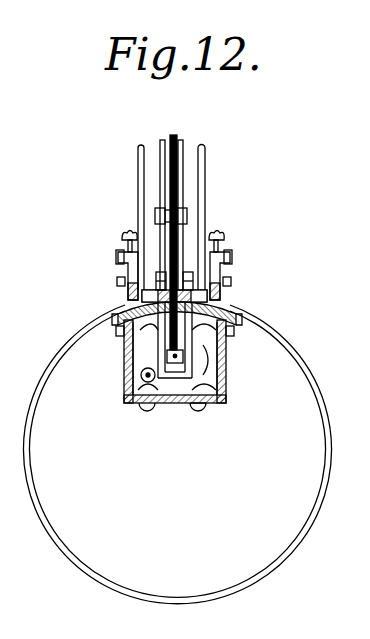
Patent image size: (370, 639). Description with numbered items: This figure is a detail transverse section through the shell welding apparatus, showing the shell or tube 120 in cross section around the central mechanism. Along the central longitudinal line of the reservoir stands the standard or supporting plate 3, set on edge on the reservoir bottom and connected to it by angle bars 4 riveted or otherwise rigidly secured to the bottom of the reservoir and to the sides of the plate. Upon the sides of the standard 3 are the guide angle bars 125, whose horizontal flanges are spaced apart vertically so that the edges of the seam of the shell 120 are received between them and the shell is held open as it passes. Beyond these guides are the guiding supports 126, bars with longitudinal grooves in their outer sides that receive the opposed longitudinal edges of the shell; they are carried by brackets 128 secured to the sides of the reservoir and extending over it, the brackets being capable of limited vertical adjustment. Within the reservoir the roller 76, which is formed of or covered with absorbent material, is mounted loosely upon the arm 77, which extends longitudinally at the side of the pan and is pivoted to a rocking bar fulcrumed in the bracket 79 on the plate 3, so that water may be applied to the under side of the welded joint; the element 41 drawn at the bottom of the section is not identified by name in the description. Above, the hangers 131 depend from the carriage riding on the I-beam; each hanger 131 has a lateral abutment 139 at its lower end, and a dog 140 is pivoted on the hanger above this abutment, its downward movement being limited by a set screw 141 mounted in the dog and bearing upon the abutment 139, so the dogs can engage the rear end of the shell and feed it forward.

The standard or supporting plate 3 is at (178, 143).
The angle bars 4 is at (216, 408).
The rollers 41 is at (178, 404).
The roller 76 is at (168, 152).
The arm 77 is at (183, 362).
The bracket 79 is at (188, 218).
The shells or tubes 120 is at (31, 401).
The angle bars 125 is at (222, 290).
The guiding supports 126 is at (229, 318).
The brackets 128 is at (224, 345).
The hangers 131 is at (138, 172).
The lateral abutment 139 is at (128, 290).
The dog 140 is at (128, 277).
The set screw 141 is at (125, 242).